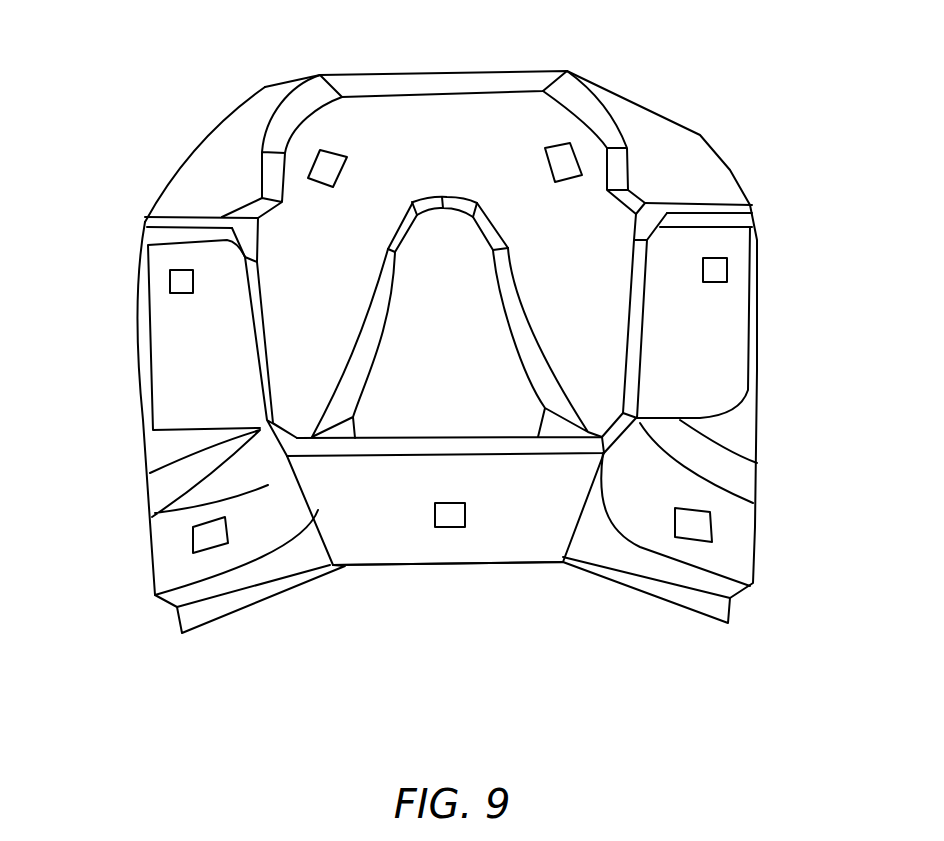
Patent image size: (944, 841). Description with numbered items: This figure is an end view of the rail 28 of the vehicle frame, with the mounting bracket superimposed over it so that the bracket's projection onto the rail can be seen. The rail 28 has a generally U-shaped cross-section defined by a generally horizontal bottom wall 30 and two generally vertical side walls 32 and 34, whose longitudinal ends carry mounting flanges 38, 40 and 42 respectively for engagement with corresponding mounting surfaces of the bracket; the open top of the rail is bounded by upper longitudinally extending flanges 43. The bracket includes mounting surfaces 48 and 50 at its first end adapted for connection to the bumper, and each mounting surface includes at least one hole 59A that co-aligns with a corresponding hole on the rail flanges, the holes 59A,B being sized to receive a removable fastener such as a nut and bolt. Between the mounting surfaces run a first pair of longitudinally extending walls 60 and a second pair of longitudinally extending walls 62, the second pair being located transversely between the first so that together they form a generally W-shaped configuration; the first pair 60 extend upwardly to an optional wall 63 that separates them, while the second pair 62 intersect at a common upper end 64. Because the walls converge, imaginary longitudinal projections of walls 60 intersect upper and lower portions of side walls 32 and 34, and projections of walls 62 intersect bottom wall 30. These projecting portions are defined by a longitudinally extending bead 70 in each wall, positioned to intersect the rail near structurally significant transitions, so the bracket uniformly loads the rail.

The rail 28 is at (519, 580).
The bottom wall 30 is at (390, 447).
The side wall 32 is at (632, 320).
The side wall 34 is at (253, 287).
The mounting flange 38 is at (547, 530).
The mounting flange 40 is at (713, 360).
The mounting flange 42 is at (173, 337).
The upper longitudinally extending flange 43 is at (707, 207).
The mounting surface 48 is at (183, 508).
The mounting surface 50 is at (640, 493).
The hole 59A is at (326, 165).
The holes 59A,B is at (713, 267).
The first pair of longitudinally extending walls 60 is at (713, 467).
The second pair of longitudinally extending walls 62 is at (520, 338).
The longitudinally extending wall 63 is at (518, 85).
The common upper end 64 is at (440, 195).
The longitudinally extending bead 70 is at (632, 200).